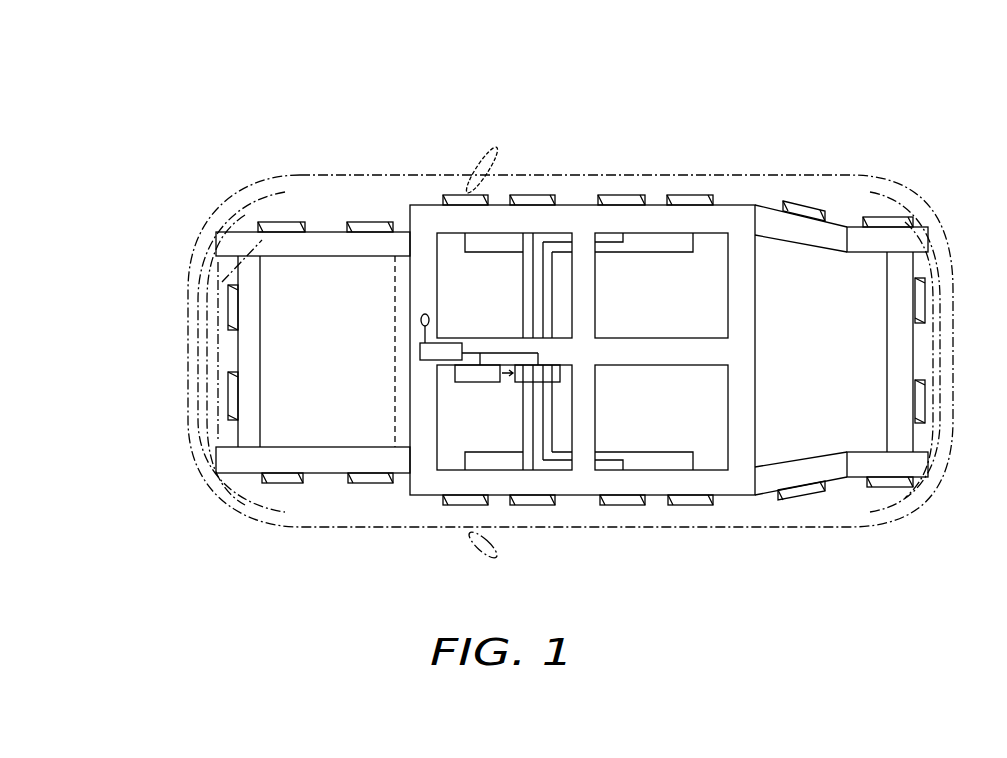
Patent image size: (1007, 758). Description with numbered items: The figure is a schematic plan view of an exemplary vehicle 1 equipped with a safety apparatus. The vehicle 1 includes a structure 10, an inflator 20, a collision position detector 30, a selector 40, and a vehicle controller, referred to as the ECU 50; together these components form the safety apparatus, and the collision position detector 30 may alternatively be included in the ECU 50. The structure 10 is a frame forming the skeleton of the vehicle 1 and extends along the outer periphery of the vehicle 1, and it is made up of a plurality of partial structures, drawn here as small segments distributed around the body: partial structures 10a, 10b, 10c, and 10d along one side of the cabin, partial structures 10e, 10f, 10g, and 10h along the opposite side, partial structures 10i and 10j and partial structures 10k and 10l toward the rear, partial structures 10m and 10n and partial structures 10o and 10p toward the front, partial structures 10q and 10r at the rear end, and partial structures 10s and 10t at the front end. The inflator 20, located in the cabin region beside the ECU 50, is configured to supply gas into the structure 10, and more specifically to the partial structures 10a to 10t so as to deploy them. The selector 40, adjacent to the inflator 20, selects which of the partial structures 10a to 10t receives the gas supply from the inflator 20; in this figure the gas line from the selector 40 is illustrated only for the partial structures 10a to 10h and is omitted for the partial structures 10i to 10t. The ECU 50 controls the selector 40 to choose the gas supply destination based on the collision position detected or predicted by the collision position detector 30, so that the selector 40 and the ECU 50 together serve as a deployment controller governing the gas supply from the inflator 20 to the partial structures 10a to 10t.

The vehicle 1 is at (180, 68).
The structure 10 is at (743, 203).
The partial structure 10a is at (450, 510).
The partial structure 10b is at (547, 510).
The partial structure 10c is at (638, 510).
The partial structure 10d is at (710, 510).
The partial structure 10e is at (450, 193).
The partial structure 10f is at (548, 193).
The partial structure 10g is at (641, 193).
The partial structure 10h is at (712, 197).
The partial structure 10i is at (292, 483).
The partial structure 10j is at (362, 487).
The partial structure 10k is at (283, 225).
The partial structure 10l is at (360, 222).
The partial structure 10m is at (790, 502).
The partial structure 10n is at (880, 493).
The partial structure 10o is at (793, 202).
The partial structure 10p is at (873, 215).
The partial structure 10q is at (212, 410).
The partial structure 10r is at (210, 296).
The partial structure 10s is at (922, 402).
The partial structure 10t is at (922, 302).
The inflator 20 is at (480, 383).
The collision position detector 30 is at (432, 310).
The selector 40 is at (517, 382).
The vehicle controller (ECU) 50 is at (447, 342).